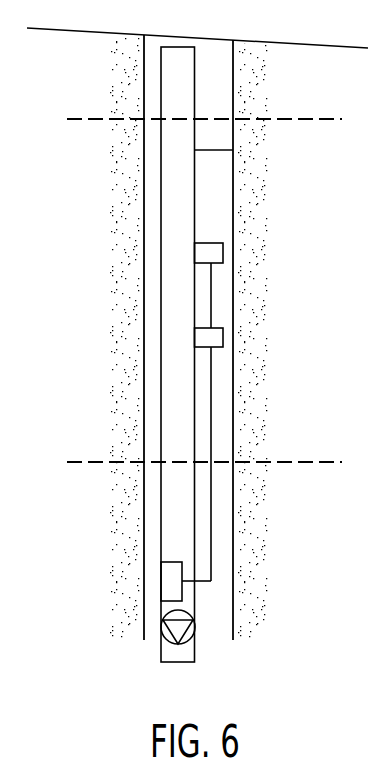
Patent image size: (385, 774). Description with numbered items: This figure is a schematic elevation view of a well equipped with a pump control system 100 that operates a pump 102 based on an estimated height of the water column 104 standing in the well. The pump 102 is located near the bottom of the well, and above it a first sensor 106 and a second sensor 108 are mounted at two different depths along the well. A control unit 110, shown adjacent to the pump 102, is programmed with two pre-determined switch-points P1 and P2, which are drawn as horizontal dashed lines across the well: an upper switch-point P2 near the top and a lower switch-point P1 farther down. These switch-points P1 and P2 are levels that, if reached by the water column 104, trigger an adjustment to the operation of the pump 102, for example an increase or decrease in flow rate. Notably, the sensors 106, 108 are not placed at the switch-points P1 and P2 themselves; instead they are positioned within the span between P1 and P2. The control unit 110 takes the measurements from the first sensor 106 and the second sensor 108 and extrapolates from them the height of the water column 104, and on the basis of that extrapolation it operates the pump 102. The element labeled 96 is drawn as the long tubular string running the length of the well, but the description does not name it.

The production tubing 96 is at (128, 354).
The pump control system 100 is at (87, 351).
The pump 102 is at (225, 651).
The water column 104 is at (267, 196).
The first sensor 106 is at (266, 272).
The second sensor 108 is at (266, 355).
The control unit 110 is at (133, 432).
The switch-point P1 is at (295, 465).
The switch-point P2 is at (297, 122).